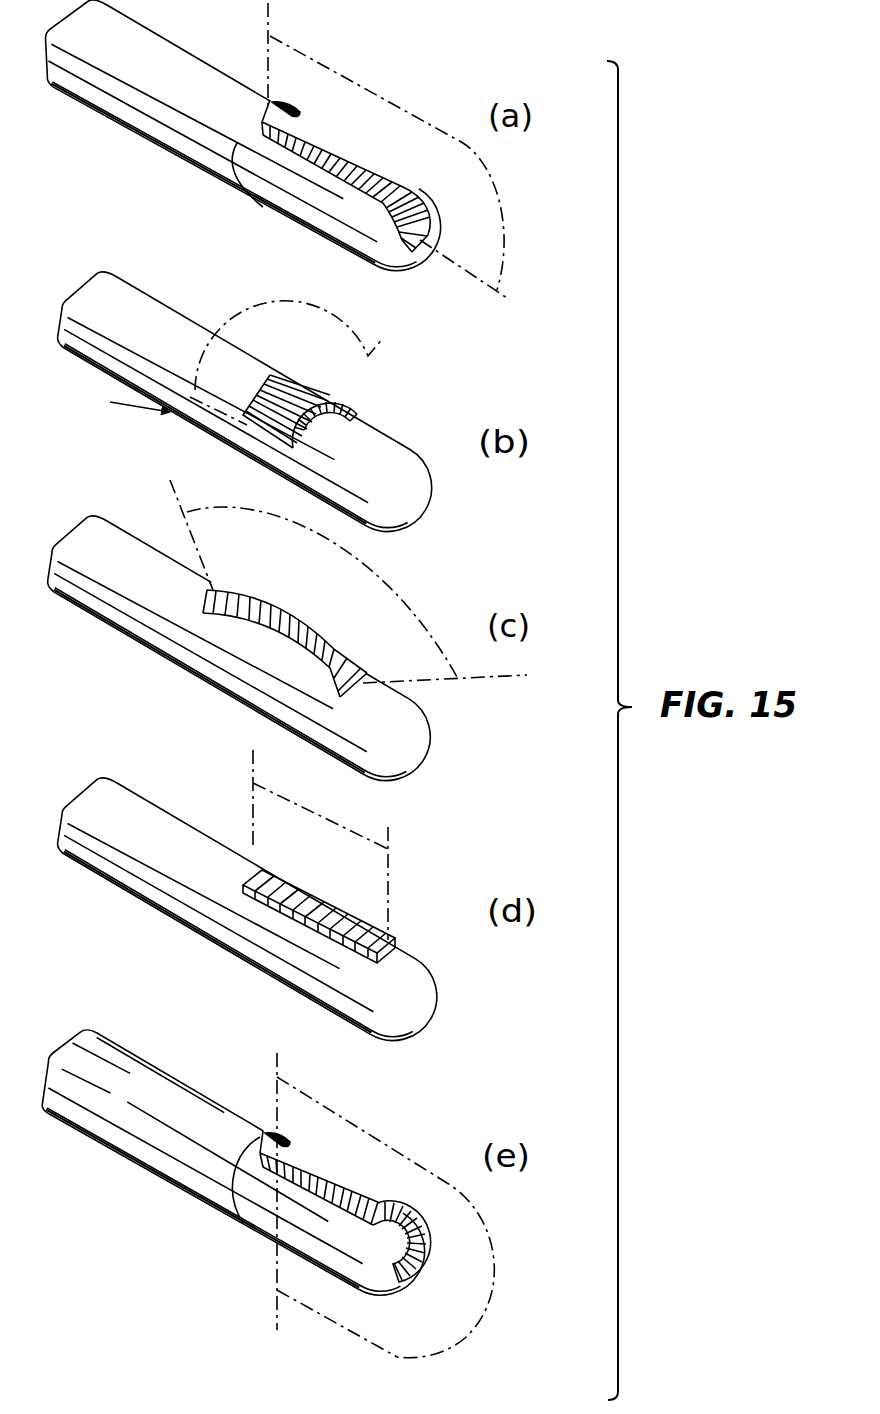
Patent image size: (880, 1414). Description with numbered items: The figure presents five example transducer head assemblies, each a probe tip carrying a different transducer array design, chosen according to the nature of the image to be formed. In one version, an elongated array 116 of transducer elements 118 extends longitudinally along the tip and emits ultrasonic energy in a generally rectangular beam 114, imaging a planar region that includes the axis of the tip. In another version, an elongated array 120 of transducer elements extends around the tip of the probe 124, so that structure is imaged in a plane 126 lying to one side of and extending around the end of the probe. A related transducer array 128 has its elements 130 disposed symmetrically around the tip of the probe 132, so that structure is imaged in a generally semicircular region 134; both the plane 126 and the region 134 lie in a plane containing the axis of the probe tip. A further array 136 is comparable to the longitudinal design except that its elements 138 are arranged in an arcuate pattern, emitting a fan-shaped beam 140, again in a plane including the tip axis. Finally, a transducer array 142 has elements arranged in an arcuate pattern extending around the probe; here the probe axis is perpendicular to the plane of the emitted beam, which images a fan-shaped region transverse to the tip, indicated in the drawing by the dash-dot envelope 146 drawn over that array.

The generally rectangular beam 114 is at (292, 387).
The elongated array 116 is at (297, 887).
The transducer elements 118 is at (363, 930).
The elongated array 120 is at (355, 155).
The probe 124 is at (148, 162).
The plane 126 is at (360, 92).
The transducer array 128 is at (330, 1163).
The elements 130 is at (398, 1213).
The probe 132 is at (193, 1217).
The generally semicircular region 134 is at (430, 1360).
The array 136 is at (343, 632).
The elements 138 is at (278, 612).
The fan-shaped beam 140 is at (397, 590).
The transducer array 142 is at (360, 397).
The circular envelope 146 is at (287, 300).